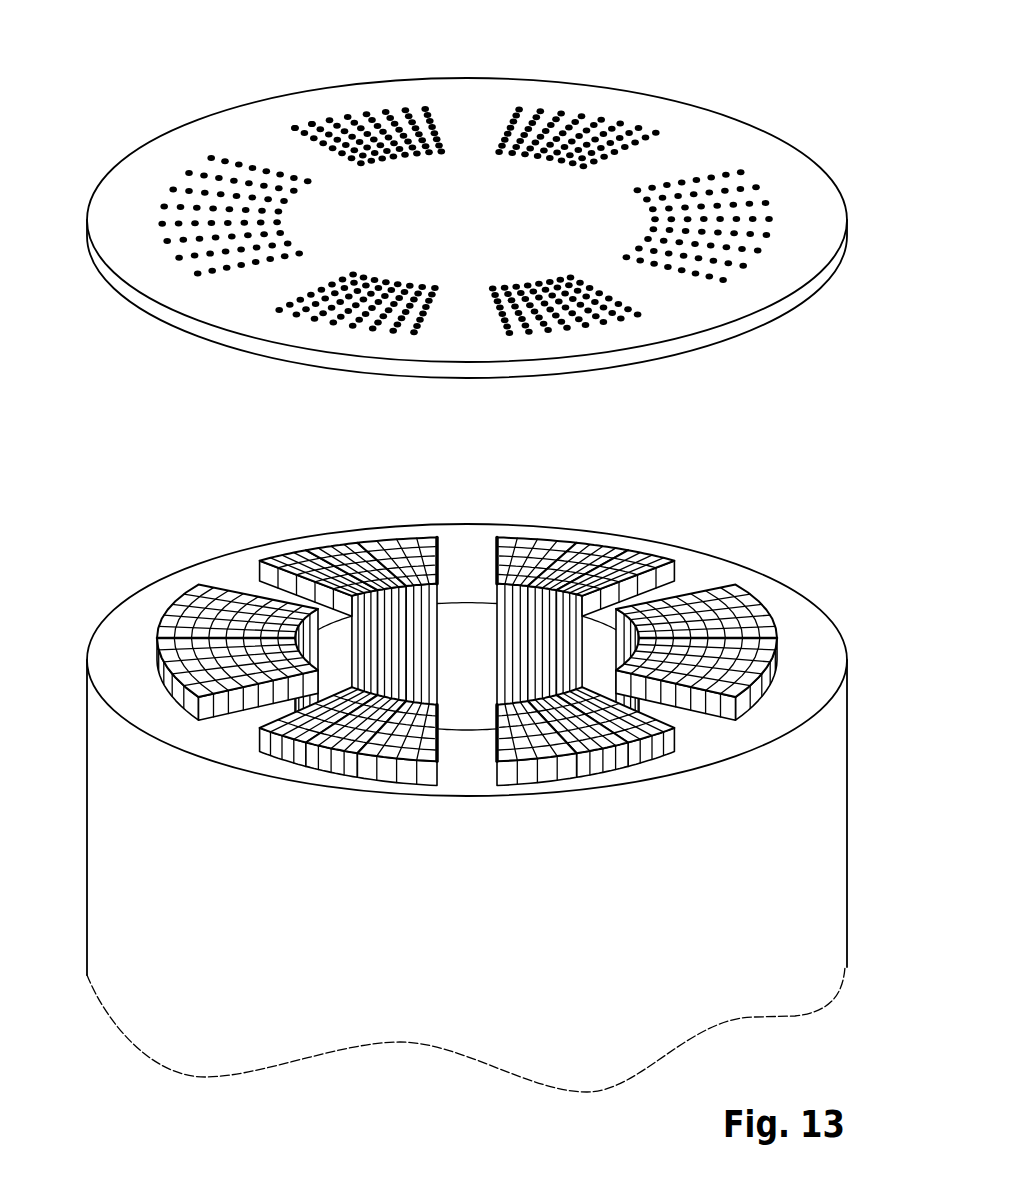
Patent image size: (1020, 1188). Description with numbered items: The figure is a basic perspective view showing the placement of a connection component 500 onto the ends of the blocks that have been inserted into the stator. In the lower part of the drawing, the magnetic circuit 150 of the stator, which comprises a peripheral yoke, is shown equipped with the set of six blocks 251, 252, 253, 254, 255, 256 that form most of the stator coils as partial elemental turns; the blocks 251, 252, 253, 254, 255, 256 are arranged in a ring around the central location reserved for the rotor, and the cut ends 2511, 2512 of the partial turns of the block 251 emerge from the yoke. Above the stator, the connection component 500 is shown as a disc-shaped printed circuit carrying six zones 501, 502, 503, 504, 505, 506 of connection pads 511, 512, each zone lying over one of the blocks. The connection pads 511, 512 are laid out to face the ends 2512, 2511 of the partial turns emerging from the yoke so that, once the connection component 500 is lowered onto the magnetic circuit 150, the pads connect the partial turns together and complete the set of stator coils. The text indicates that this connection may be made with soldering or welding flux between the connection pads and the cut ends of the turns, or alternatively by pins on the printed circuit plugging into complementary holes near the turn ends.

The connection component 500 is at (723, 113).
The zone of connection pads 501 is at (332, 112).
The zone of connection pads 502 is at (592, 110).
The zone of connection pads 503 is at (768, 233).
The zone of connection pads 504 is at (597, 330).
The zone of connection pads 505 is at (343, 328).
The zone of connection pads 506 is at (163, 212).
The connection pad 511 is at (292, 128).
The connection pad 512 is at (310, 123).
The magnetic circuit 150 is at (113, 803).
The block 251 is at (395, 782).
The end of partial turn 2511 is at (300, 770).
The end of partial turn 2512 is at (265, 752).
The block 252 is at (765, 675).
The block 253 is at (677, 572).
The block 254 is at (427, 537).
The block 255 is at (290, 557).
The block 256 is at (160, 655).